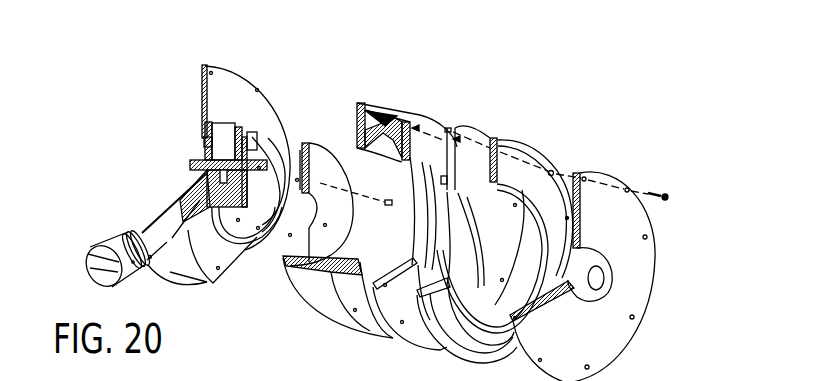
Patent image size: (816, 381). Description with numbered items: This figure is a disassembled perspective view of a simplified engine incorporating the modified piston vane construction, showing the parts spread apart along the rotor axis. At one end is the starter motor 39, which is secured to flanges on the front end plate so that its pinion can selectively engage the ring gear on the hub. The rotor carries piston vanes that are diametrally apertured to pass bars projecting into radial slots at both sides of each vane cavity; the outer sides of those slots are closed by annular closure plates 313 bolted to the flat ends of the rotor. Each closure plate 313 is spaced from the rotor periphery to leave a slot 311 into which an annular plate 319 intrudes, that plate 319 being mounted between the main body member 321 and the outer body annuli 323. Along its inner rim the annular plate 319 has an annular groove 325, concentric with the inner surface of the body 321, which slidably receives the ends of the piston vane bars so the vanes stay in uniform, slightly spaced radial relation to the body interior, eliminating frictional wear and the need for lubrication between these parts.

The starter motor 39 is at (202, 79).
The annular groove 325 is at (205, 140).
The slot 311 is at (205, 147).
The annular plate (closure plate) 313 is at (340, 185).
The main body member 321 is at (358, 103).
The annular plate 319 is at (467, 126).
The outer body annuli 323 is at (535, 143).